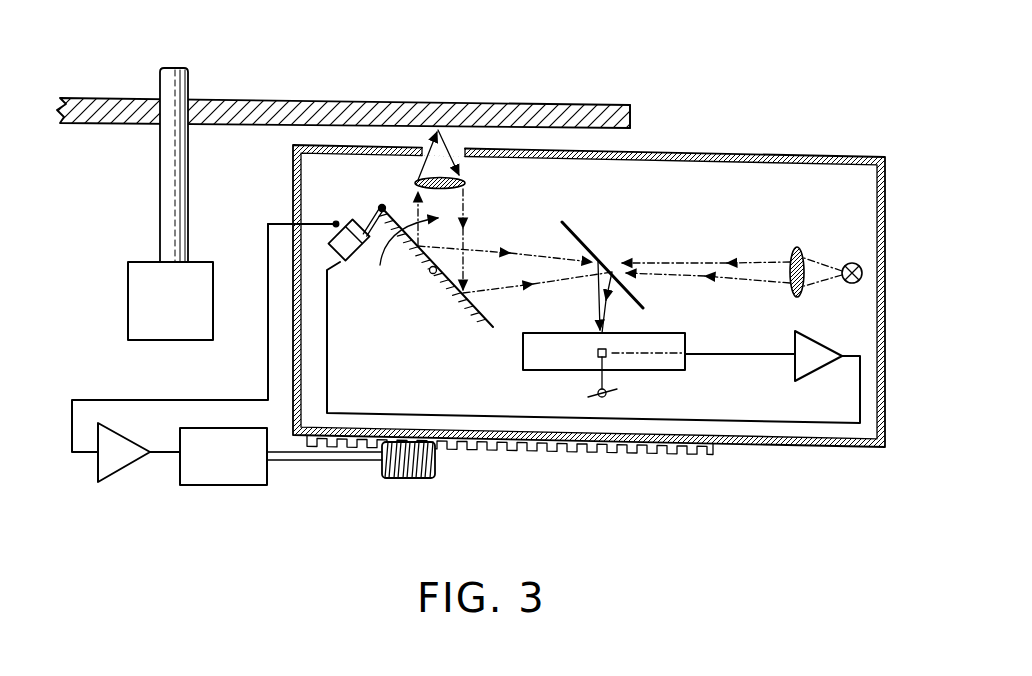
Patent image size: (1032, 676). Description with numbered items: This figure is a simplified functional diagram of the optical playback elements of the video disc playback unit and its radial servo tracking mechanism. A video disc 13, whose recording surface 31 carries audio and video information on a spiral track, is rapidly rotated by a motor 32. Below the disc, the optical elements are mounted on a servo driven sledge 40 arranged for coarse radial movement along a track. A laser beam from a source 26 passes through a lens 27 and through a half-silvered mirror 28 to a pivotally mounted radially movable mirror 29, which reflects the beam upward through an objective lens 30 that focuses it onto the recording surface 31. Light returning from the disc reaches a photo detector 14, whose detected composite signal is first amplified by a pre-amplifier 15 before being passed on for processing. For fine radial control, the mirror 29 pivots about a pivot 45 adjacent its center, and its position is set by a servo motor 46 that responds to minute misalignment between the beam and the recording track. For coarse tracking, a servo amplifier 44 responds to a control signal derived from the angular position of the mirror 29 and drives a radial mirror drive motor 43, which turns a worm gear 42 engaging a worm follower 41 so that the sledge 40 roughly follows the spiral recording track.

The video disc 13 is at (583, 112).
The recording surface 31 is at (622, 143).
The servo driven sledge 40 is at (776, 148).
The motor 32 is at (127, 290).
The objective lens 30 is at (447, 192).
The half-silvered mirror 28 is at (568, 224).
The lens 27 is at (796, 247).
The source 26 is at (852, 262).
The servo motor 46 is at (352, 264).
The pivot 45 is at (432, 275).
The radially movable mirror 29 is at (474, 305).
The photo detector 14 is at (662, 337).
The pre-amplifier 15 is at (810, 347).
The servo amplifier 44 is at (114, 463).
The radial mirror drive motor 43 is at (226, 486).
The worm gear 42 is at (432, 462).
The worm follower 41 is at (558, 453).